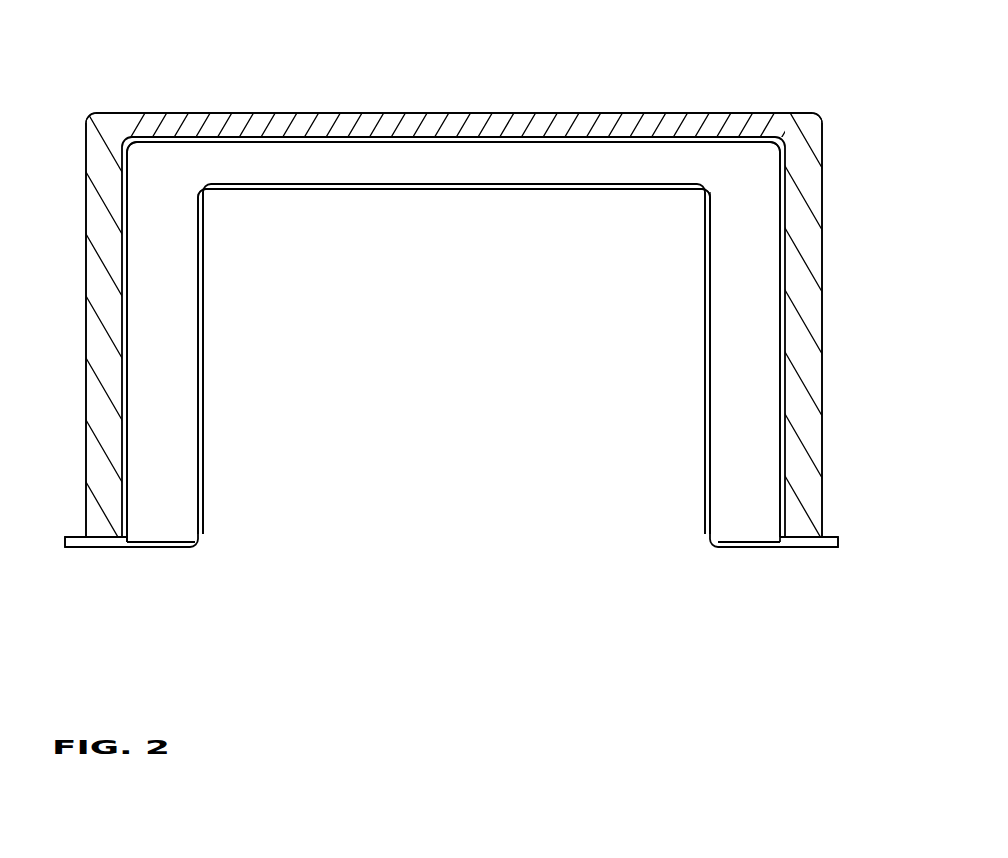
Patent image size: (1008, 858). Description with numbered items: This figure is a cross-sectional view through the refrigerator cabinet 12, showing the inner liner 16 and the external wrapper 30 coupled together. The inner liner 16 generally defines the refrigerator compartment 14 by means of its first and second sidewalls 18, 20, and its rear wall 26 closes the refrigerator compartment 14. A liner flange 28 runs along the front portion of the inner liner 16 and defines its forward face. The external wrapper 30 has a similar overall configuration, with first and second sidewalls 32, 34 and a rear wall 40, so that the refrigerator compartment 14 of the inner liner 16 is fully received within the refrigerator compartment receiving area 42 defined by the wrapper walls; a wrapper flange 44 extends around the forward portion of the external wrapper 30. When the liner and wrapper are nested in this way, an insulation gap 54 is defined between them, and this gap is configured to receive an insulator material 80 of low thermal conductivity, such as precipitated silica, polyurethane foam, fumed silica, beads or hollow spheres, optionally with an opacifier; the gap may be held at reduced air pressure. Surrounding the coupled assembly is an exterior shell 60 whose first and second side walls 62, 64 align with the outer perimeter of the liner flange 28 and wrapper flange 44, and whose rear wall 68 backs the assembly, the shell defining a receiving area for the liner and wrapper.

The cabinet 12 is at (815, 59).
The refrigerator compartment 14 is at (418, 397).
The inner liner 16 is at (590, 195).
The first sidewall 18 is at (203, 386).
The second sidewall 20 is at (707, 362).
The rear wall 26 is at (298, 186).
The liner flange 28 is at (165, 548).
The external wrapper 30 is at (679, 132).
The first sidewall 32 is at (126, 353).
The second sidewall 34 is at (786, 337).
The rear wall 40 is at (302, 137).
The refrigerator compartment receiving area 42 is at (146, 165).
The wrapper flange 44 is at (78, 536).
The insulation gap 54 is at (450, 170).
The exterior shell 60 is at (179, 98).
The first side wall 62 is at (86, 243).
The second side wall 64 is at (822, 255).
The rear wall 68 is at (232, 111).
The insulator material 80 is at (334, 173).